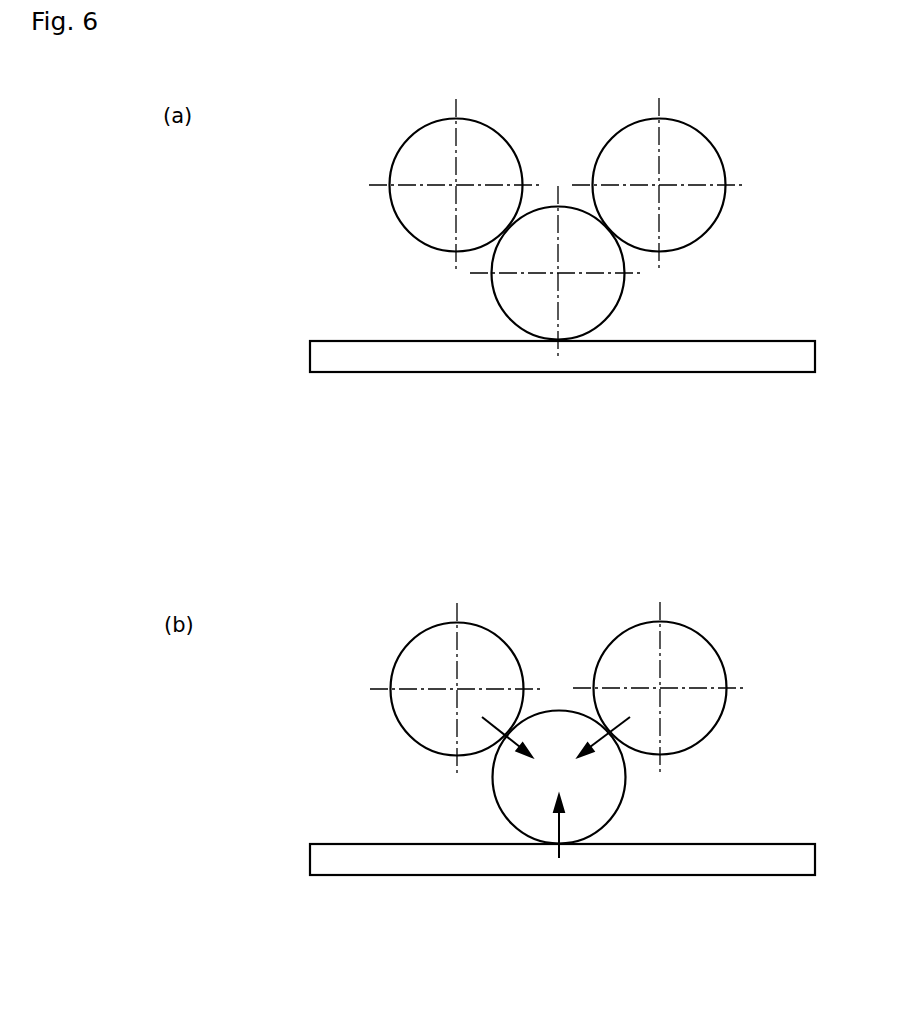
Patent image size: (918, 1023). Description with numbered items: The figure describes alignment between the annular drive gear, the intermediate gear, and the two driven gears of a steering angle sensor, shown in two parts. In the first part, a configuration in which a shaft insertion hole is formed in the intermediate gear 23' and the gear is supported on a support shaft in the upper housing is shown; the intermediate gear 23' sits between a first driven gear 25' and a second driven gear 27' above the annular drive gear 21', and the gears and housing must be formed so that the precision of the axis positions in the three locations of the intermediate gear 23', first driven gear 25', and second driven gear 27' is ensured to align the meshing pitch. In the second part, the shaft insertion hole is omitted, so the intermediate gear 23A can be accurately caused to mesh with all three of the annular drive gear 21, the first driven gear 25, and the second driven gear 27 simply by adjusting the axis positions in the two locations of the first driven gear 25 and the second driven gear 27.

The first driven gear 25' is at (469, 184).
The second driven gear 27' is at (680, 184).
The intermediate gear 23' is at (525, 272).
The substrate sheet (comparative) 21' is at (562, 322).
The first driven gear 25 is at (467, 689).
The second driven gear 27 is at (678, 688).
The intermediate gear 23A is at (510, 800).
The annular drive gear 21 is at (562, 827).